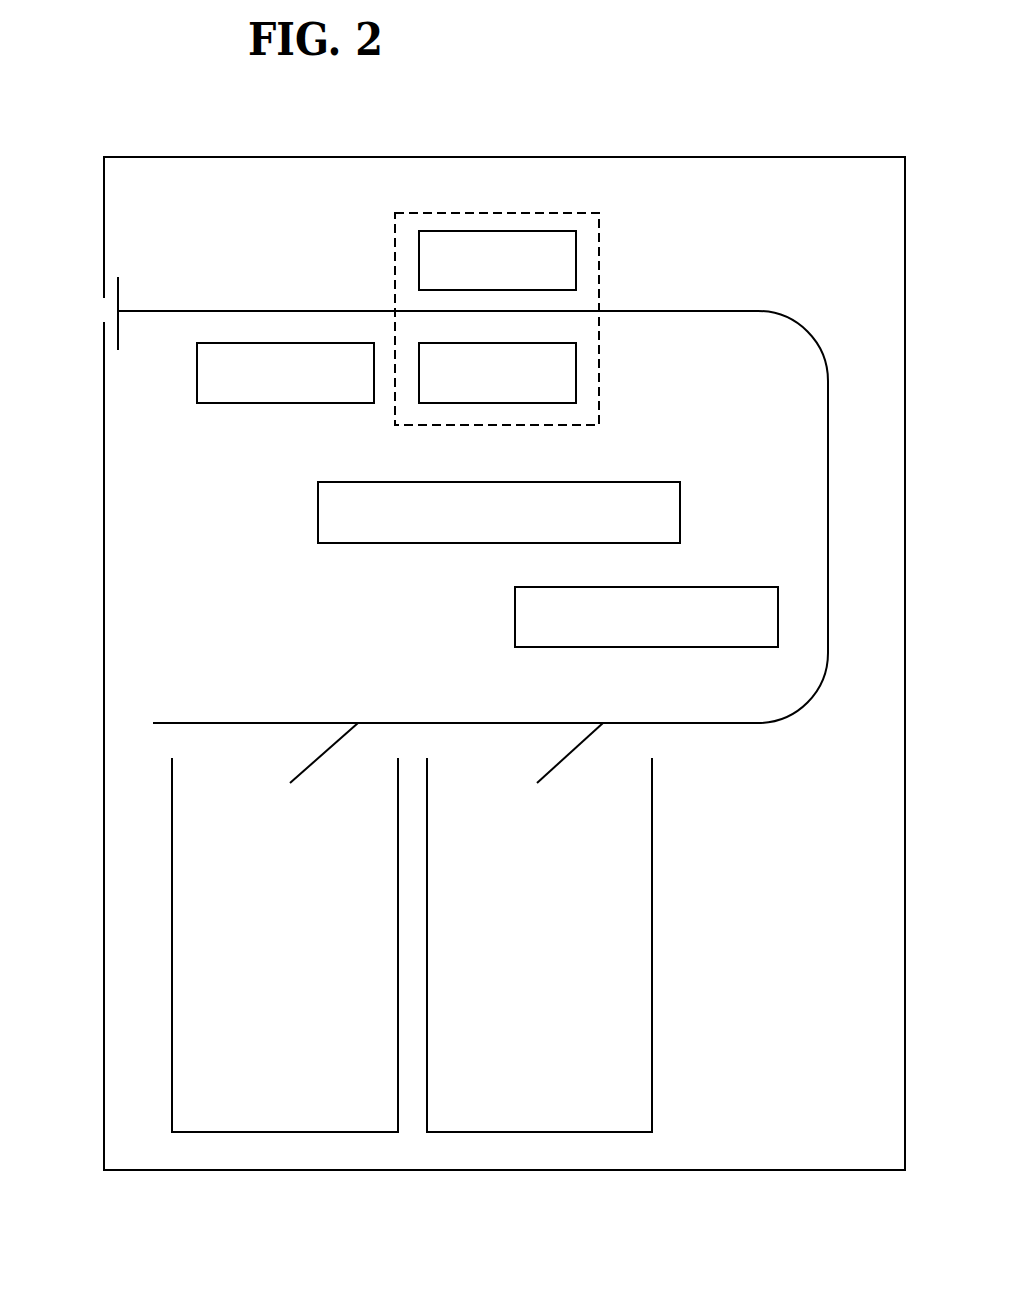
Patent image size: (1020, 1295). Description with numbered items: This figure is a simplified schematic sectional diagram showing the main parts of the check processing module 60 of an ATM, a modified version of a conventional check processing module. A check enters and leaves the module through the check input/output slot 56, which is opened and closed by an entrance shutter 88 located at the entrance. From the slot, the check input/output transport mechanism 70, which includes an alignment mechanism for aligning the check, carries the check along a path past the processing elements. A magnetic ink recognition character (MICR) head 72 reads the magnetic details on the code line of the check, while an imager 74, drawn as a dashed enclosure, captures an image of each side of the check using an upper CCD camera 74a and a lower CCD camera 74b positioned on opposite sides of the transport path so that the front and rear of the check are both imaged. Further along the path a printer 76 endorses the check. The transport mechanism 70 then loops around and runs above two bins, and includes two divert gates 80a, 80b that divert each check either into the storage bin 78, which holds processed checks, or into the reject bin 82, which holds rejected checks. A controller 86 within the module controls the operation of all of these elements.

The check input/output slot 56 is at (103, 310).
The check processing module 60 is at (772, 157).
The check input/output transport mechanism 70 is at (286, 311).
The magnetic ink recognition character (MICR) head 72 is at (218, 403).
The imager 74 is at (500, 212).
The upper CCD camera 74a is at (576, 260).
The lower CCD camera 74b is at (576, 372).
The printer 76 is at (735, 587).
The storage bin 78 is at (545, 1132).
The divert gate 80a is at (603, 722).
The divert gate 80b is at (358, 722).
The reject bin 82 is at (280, 1132).
The controller 86 is at (318, 511).
The entrance shutter 88 is at (115, 287).